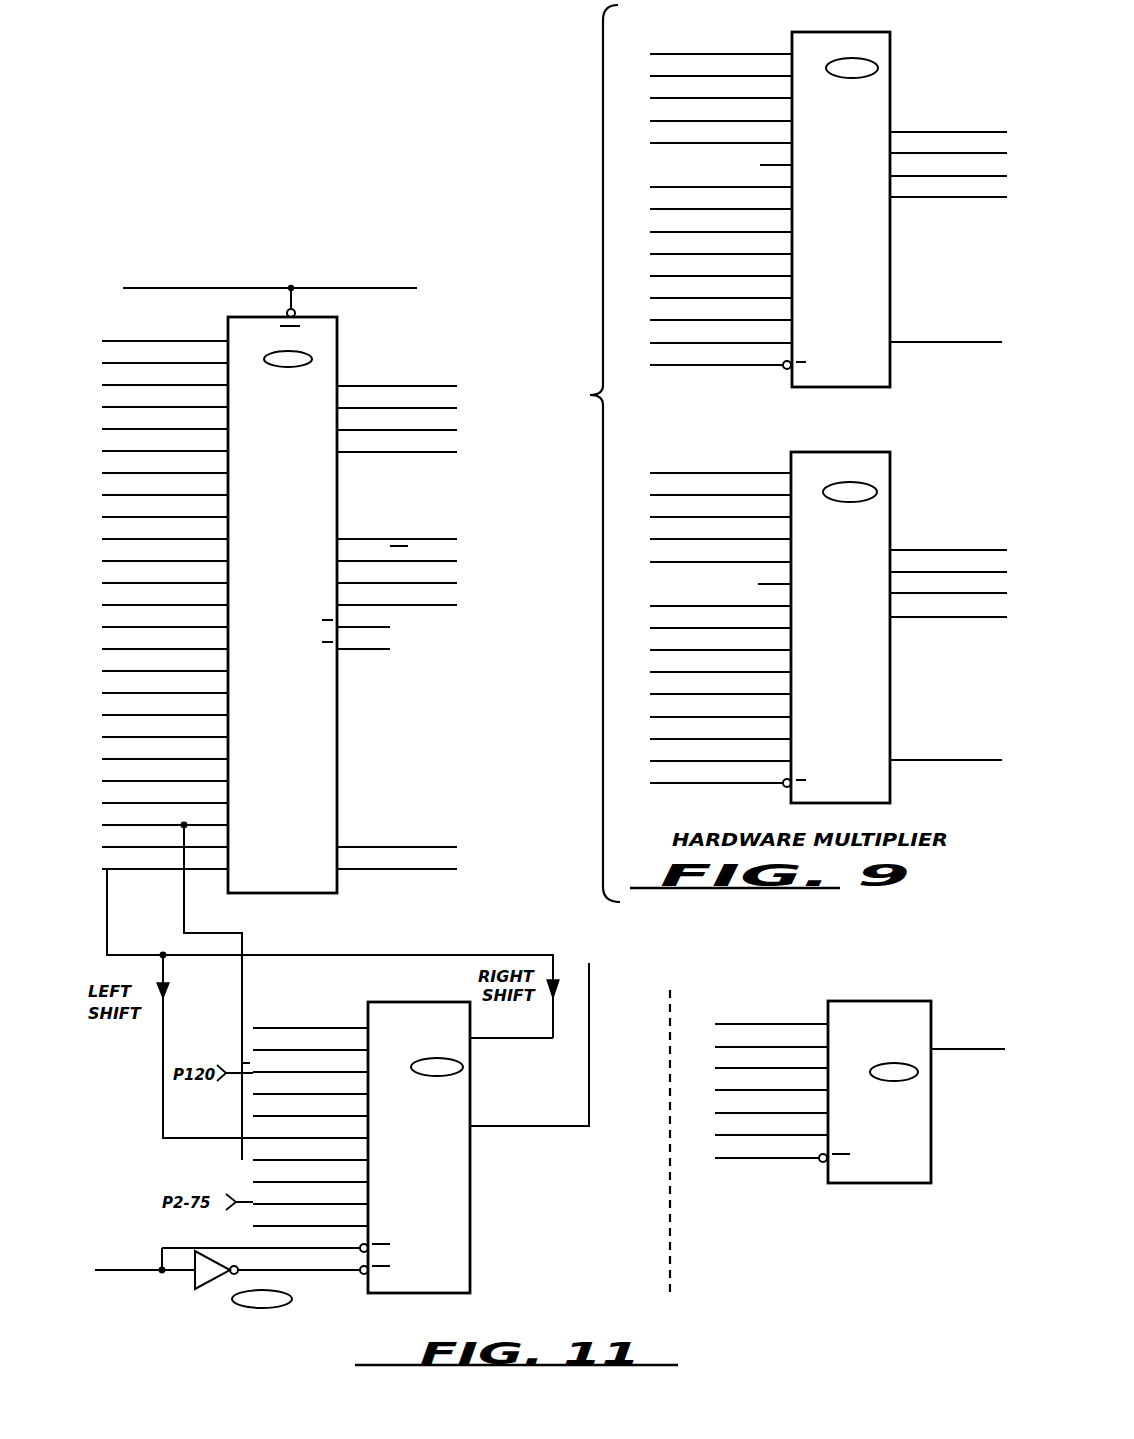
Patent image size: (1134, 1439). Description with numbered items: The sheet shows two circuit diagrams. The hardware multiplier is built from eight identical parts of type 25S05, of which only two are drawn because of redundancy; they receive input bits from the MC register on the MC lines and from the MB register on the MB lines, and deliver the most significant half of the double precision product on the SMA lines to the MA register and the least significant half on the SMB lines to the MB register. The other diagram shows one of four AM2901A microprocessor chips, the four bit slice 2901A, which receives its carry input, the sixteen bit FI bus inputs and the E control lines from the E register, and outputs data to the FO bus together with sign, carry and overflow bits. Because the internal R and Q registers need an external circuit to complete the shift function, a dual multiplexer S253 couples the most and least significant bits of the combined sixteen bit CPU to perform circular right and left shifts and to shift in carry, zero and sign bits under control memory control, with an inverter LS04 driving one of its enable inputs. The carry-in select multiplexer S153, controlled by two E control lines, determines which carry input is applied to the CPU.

In FIG. 11, the AM2901A microprocessor chip 2901A is at (278, 580).
In FIG. 9, the hardware multiplier part 25S05 is at (828, 407).
In FIG. 11, the dual multiplexer S253 is at (392, 1137).
In FIG. 11, the carry-in select multiplexer S153 is at (842, 1115).
In FIG. 11, the inverter LS04 is at (193, 1279).